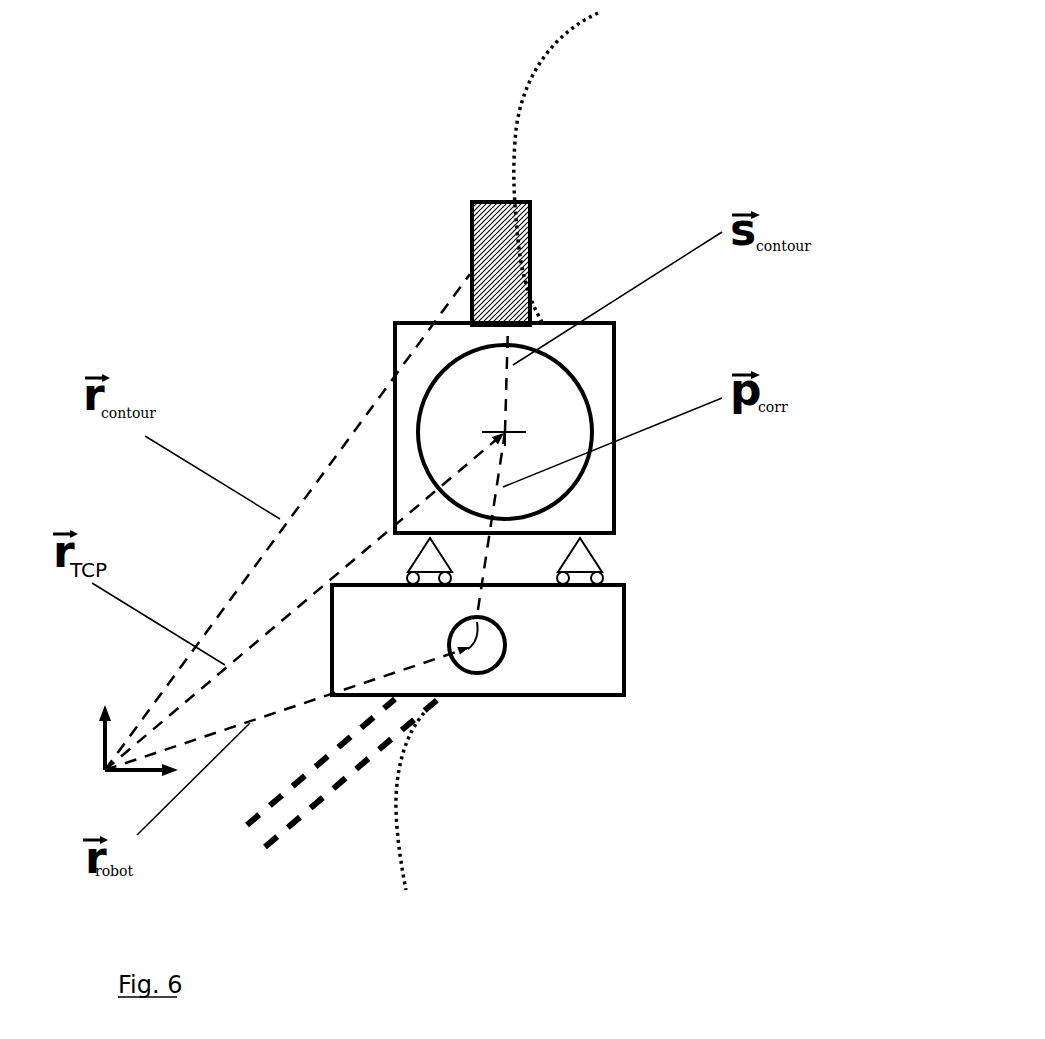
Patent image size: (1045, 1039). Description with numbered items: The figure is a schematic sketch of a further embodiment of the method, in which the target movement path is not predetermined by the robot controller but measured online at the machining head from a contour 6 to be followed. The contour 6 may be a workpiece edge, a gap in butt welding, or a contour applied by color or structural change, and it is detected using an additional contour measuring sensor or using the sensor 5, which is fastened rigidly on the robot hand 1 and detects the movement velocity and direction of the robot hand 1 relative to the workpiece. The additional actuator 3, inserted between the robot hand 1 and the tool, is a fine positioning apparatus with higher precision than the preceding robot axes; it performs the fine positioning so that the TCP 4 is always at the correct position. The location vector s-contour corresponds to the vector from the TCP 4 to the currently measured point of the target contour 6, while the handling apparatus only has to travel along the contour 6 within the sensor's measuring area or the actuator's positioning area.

The robot hand 1 is at (640, 633).
The additional actuator 3 is at (623, 555).
The TCP 4 is at (522, 418).
The sensor 5 is at (550, 263).
The contour 6 is at (523, 100).